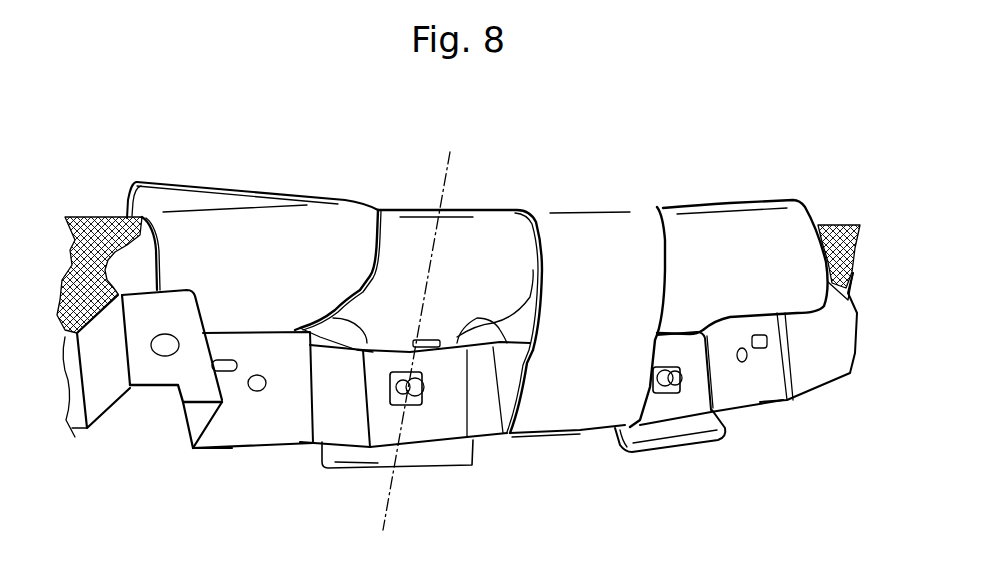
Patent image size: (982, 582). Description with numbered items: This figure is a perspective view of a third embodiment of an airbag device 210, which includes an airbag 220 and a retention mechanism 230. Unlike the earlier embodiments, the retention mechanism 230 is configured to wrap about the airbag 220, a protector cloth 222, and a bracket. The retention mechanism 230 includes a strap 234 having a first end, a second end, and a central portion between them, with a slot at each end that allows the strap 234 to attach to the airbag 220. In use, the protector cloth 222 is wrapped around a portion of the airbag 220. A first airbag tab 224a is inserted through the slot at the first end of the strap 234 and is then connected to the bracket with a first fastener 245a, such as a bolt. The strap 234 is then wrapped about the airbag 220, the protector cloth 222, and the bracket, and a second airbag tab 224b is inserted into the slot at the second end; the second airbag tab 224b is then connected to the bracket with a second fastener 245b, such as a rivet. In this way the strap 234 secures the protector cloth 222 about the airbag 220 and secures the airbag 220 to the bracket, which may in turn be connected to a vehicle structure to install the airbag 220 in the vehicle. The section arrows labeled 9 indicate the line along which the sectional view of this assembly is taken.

The airbag device 210 is at (671, 137).
The airbag 220 is at (92, 222).
The protector cloth 222 is at (743, 217).
The strap 234 is at (490, 223).
The retention mechanism 230 is at (570, 454).
The first airbag tab 224a is at (647, 440).
The second airbag tab 224b is at (428, 455).
The first fastener 245a is at (670, 393).
The second fastener 245b is at (425, 390).
The section line 9- 9 is at (450, 152).